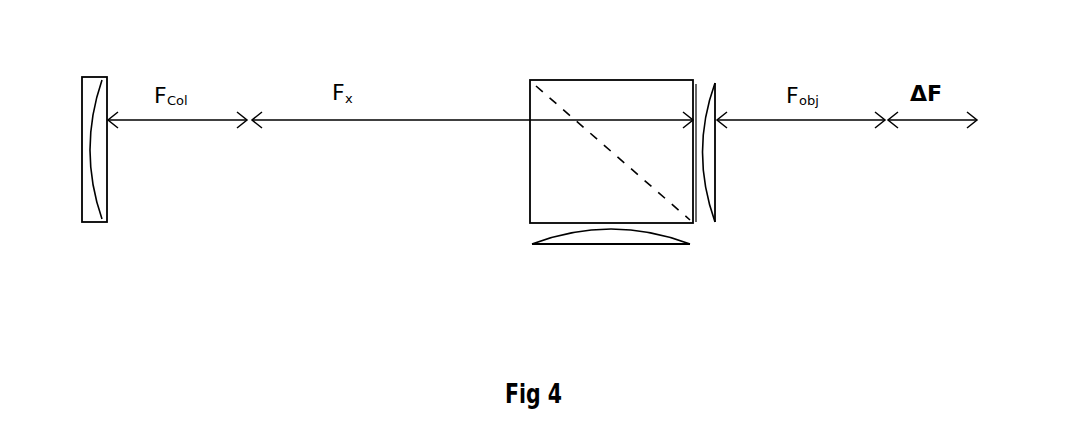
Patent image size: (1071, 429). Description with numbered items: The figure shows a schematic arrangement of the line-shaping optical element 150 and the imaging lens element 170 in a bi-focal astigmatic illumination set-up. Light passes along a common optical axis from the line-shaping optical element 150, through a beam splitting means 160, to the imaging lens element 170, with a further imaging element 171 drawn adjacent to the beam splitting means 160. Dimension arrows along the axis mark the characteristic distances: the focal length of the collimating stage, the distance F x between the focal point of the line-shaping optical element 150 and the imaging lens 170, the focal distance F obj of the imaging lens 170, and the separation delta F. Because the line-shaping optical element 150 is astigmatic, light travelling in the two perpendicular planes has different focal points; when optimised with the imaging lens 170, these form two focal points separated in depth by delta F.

The line-shaping optical element 150 is at (87, 167).
The beam splitting means 160 is at (611, 151).
The imaging lens element 170 is at (699, 132).
The further imaging element 171 is at (575, 242).